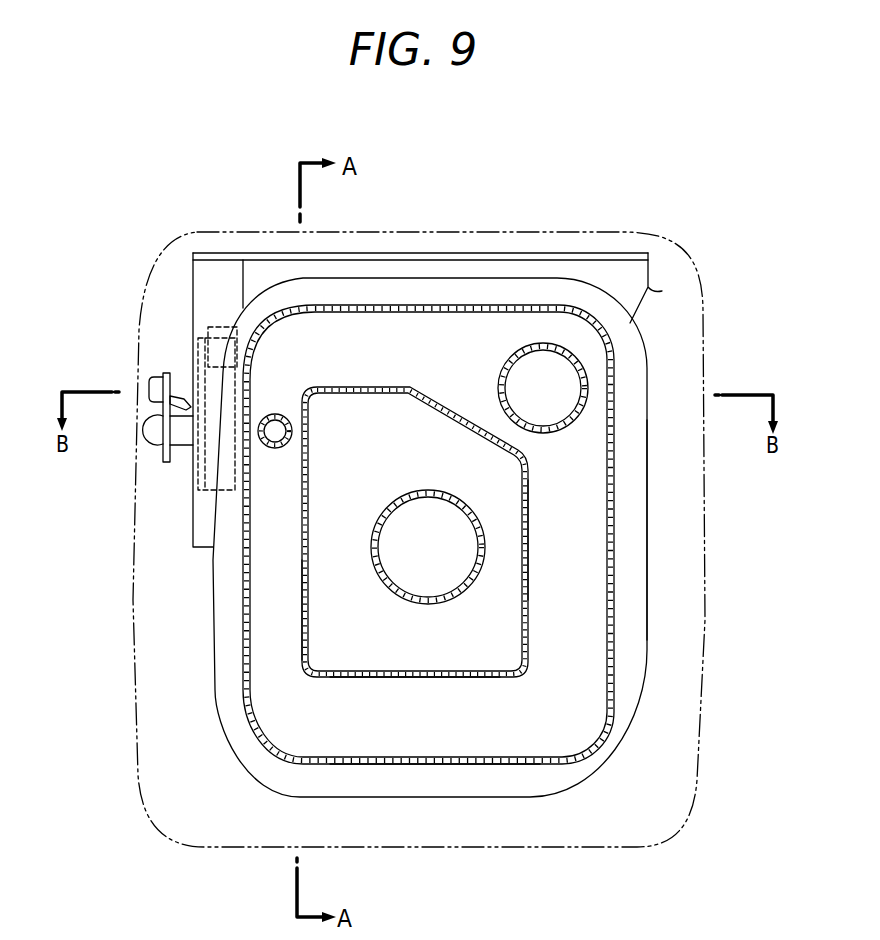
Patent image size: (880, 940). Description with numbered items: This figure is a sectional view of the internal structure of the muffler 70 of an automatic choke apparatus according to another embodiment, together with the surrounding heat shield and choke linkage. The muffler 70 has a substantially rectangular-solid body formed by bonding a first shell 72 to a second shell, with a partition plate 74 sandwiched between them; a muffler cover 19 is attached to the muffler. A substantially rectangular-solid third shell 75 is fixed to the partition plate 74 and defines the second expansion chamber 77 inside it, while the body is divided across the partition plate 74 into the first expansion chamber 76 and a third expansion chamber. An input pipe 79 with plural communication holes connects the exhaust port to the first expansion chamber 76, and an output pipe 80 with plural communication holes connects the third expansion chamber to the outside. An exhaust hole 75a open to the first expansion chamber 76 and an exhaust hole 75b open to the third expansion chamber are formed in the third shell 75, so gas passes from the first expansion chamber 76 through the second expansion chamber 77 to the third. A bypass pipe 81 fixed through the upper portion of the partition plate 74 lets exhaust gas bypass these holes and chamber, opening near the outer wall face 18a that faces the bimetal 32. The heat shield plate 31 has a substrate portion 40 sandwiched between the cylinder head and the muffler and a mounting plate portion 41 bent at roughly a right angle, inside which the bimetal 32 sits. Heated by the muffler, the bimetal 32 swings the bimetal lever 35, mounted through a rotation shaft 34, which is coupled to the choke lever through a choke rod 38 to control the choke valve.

The outer wall face 18a is at (228, 345).
The muffler cover 19 is at (503, 232).
The heat shield plate 31 is at (541, 251).
The bimetal 32 is at (200, 494).
The rotation shaft 34 is at (151, 431).
The bimetal lever 35 is at (165, 456).
The choke rod 38 is at (156, 381).
The substrate portion 40 is at (654, 290).
The mounting plate portion 41 is at (193, 297).
The muffler 70 is at (235, 746).
The first shell 72 is at (242, 697).
The partition plate 74 is at (545, 715).
The third shell 75 is at (390, 387).
The exhaust hole 75a is at (530, 477).
The exhaust hole 75b is at (302, 632).
The first expansion chamber 76 is at (572, 665).
The second expansion chamber 77 is at (437, 650).
The input pipe 79 is at (487, 583).
The output pipe 80 is at (582, 358).
The bypass pipe 81 is at (282, 416).